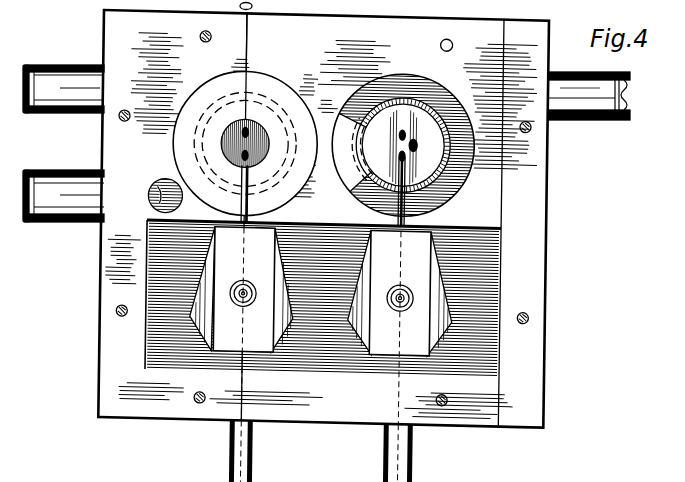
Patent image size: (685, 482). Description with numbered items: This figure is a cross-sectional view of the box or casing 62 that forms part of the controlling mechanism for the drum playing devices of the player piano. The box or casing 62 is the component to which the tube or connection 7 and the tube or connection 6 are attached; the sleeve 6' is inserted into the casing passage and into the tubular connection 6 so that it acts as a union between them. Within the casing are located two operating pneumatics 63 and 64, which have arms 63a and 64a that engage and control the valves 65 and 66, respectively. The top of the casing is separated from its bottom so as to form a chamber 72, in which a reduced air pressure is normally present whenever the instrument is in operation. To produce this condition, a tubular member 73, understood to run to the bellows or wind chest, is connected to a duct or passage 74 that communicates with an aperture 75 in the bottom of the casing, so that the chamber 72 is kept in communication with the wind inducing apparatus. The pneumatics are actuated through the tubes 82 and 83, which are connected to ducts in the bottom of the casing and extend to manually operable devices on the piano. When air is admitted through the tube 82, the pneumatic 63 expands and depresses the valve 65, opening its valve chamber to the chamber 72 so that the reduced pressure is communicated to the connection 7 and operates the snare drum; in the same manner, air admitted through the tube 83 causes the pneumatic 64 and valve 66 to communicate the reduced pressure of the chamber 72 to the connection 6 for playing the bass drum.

The tube or connection 6 is at (596, 113).
The sleeve 6' is at (582, 129).
The tube or connection 7 is at (25, 66).
The tubular member 73 is at (29, 170).
The duct or passage 74 is at (151, 207).
The aperture 75 is at (160, 182).
The box or casing 62 is at (547, 252).
The chamber 72 is at (503, 294).
The operating pneumatic 63 is at (219, 274).
The arm 63a is at (238, 180).
The operating pneumatic 64 is at (385, 246).
The arm 64a is at (447, 199).
The valve 65 is at (226, 130).
The valve 66 is at (416, 118).
The tube 82 is at (258, 468).
The tube 83 is at (417, 466).